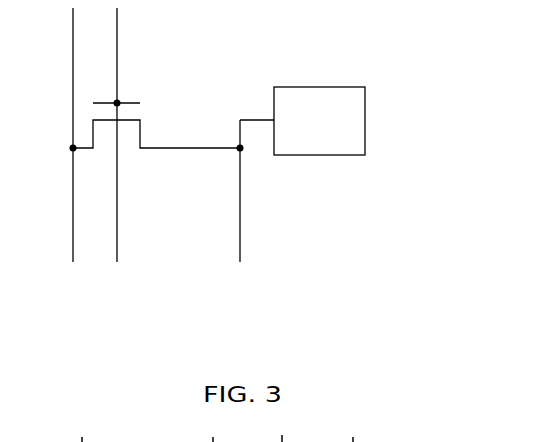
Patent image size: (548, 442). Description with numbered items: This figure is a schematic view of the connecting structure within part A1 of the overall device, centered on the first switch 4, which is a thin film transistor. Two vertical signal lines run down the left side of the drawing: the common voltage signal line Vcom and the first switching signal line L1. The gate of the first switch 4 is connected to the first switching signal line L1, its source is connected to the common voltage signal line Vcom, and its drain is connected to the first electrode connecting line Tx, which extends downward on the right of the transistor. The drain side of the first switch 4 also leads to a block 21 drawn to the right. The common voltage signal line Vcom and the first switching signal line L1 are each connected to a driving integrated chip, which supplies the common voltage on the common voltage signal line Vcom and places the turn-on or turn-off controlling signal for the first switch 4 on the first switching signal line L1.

The first switch 4 is at (147, 112).
The pixel electrode / storage unit 21 is at (345, 123).
The part A1 is at (300, 222).
The common voltage signal line Vcom is at (63, 147).
The first switching signal line L1 is at (119, 150).
The first electrode connecting line Tx is at (235, 207).